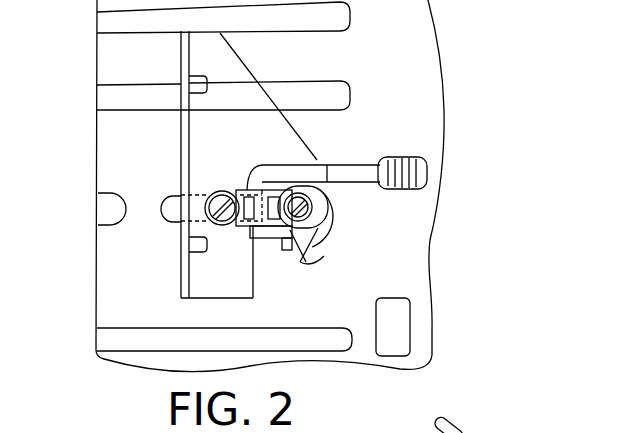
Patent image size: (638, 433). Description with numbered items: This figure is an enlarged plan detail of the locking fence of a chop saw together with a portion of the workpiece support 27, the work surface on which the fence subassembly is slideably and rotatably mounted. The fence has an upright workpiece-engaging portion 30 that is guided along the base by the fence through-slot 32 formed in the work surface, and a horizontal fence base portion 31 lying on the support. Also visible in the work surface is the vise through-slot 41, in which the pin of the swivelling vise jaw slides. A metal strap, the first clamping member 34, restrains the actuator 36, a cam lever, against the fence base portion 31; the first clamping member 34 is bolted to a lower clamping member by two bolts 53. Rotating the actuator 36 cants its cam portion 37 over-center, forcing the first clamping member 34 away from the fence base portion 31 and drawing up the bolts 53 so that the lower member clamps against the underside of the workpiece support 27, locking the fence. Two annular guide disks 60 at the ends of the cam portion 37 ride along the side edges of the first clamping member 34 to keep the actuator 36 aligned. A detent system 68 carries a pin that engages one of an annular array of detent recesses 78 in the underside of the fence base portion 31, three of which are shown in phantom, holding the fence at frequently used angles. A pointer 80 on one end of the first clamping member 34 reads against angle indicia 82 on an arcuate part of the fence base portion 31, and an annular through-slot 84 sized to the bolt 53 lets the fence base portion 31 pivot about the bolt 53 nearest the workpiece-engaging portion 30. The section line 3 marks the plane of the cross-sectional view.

The section line 3- 3 is at (100, 210).
The workpiece support 27 is at (140, 272).
The workpiece-engaging portion 30 is at (177, 52).
The fence base portion 31 is at (248, 273).
The fence through-slot 32 is at (166, 202).
The first clamping member 34 is at (245, 225).
The actuator 36 is at (372, 156).
The cam portion 37 is at (213, 190).
The vise through-slot 41 is at (107, 215).
The bolts 53 is at (210, 222).
The guide disks 60 is at (251, 188).
The detent system 68 is at (260, 252).
The detent recesses 78 is at (262, 188).
The pointer 80 is at (333, 218).
The angle indicia 82 is at (323, 244).
The annular through-slot 84 is at (265, 280).